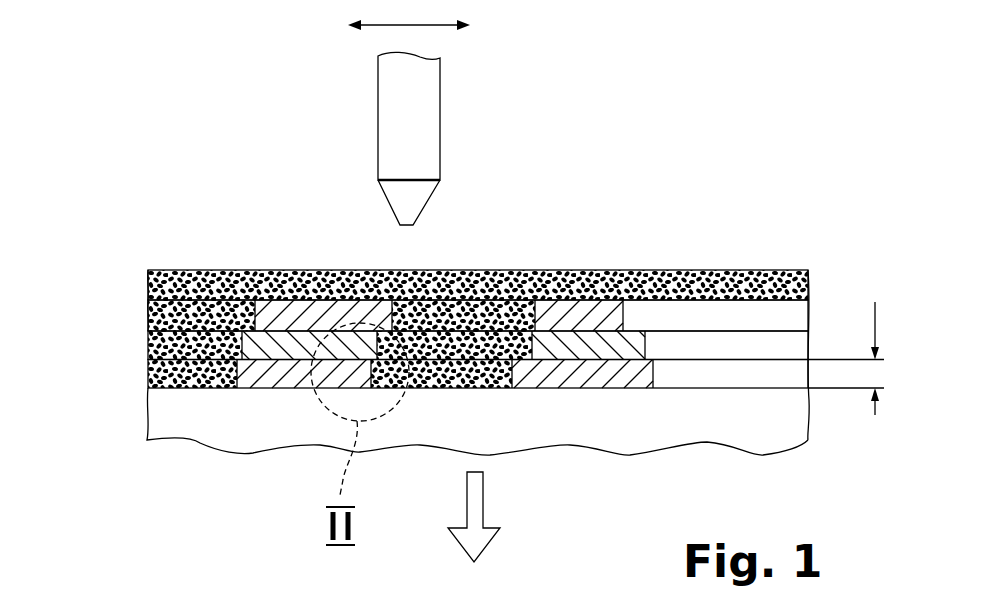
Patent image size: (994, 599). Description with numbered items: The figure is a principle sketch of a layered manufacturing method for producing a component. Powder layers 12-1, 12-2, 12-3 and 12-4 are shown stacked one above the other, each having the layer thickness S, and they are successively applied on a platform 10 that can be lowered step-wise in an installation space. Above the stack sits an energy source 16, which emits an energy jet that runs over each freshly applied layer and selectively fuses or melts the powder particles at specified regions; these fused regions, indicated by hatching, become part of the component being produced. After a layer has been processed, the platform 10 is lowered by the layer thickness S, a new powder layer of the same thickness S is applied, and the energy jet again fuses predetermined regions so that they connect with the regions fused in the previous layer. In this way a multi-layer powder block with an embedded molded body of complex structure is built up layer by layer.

The platform 10 is at (250, 463).
The powder layer 12-1 is at (148, 372).
The powder layer 12-2 is at (148, 344).
The powder layer 12-3 is at (148, 318).
The powder layer 12-4 is at (148, 285).
The energy source 16 is at (425, 115).
The layer thickness S is at (877, 373).